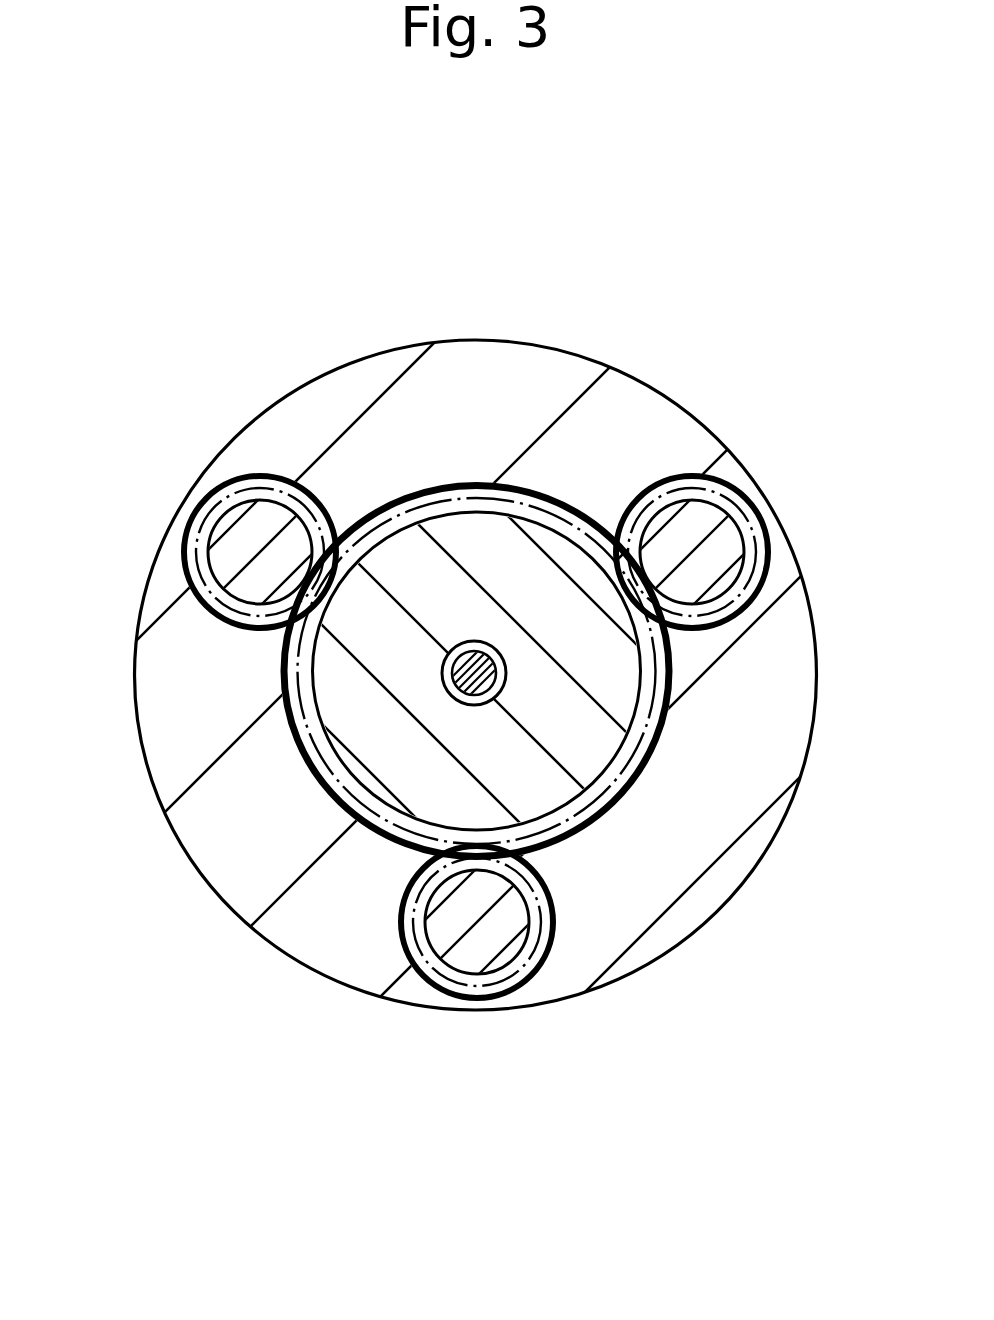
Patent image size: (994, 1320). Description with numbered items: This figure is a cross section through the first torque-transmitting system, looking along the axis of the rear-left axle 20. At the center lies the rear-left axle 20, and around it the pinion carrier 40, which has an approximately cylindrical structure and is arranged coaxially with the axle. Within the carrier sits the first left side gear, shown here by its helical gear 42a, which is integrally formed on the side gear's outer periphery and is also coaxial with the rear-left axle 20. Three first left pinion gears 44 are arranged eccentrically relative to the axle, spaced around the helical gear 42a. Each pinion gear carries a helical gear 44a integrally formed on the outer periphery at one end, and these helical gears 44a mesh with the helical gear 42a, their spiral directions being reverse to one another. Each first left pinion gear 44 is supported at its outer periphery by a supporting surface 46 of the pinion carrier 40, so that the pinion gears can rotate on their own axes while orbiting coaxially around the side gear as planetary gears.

The rear-left axle 20 is at (484, 680).
The pinion carrier 40 is at (483, 362).
The helical gear 42a is at (380, 840).
The first left pinion gears 44 is at (244, 530).
The helical gear 44a is at (405, 893).
The supporting surface 46 is at (190, 555).